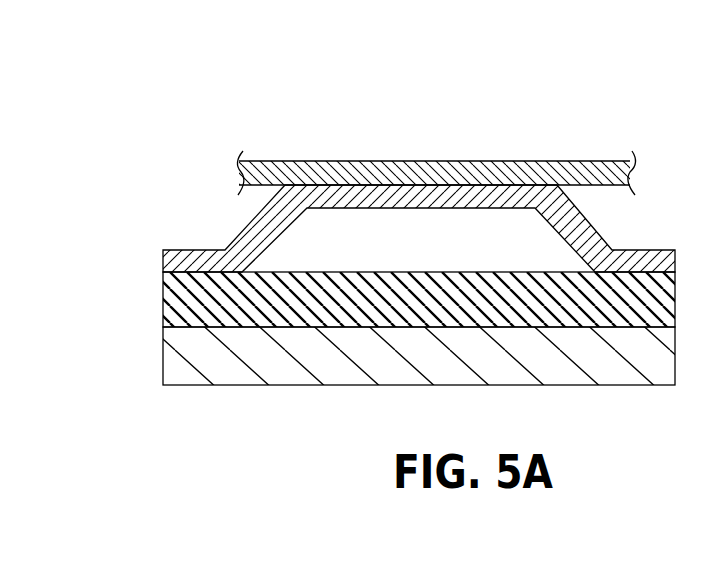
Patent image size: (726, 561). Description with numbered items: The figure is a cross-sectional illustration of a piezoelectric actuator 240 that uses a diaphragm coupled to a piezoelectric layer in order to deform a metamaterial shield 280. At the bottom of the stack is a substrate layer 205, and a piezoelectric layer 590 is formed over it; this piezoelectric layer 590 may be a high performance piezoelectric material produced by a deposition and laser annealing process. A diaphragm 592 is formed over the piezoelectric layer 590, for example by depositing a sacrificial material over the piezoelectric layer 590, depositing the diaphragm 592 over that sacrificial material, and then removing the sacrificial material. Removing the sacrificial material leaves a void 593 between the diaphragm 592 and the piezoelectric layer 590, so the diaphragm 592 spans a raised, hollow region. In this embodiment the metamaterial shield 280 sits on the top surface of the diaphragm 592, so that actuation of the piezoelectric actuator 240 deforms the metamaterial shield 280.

The piezoelectric actuator 240 is at (172, 125).
The substrate layer 205 is at (603, 367).
The piezoelectric layer 590 is at (168, 303).
The diaphragm 592 is at (594, 228).
The metamaterial shield 280 is at (595, 163).
The void 593 is at (338, 228).